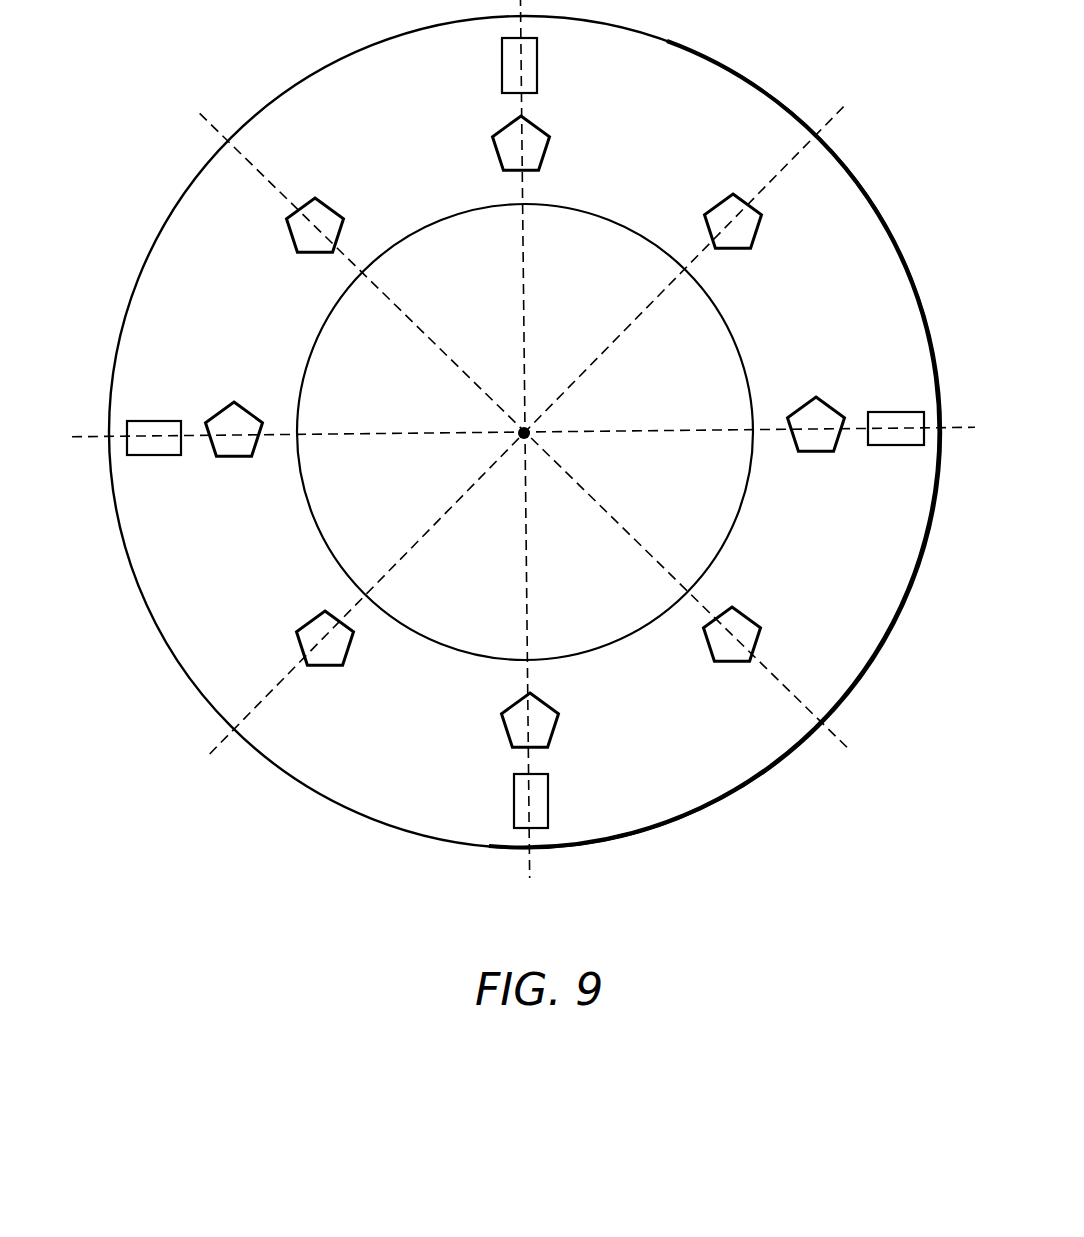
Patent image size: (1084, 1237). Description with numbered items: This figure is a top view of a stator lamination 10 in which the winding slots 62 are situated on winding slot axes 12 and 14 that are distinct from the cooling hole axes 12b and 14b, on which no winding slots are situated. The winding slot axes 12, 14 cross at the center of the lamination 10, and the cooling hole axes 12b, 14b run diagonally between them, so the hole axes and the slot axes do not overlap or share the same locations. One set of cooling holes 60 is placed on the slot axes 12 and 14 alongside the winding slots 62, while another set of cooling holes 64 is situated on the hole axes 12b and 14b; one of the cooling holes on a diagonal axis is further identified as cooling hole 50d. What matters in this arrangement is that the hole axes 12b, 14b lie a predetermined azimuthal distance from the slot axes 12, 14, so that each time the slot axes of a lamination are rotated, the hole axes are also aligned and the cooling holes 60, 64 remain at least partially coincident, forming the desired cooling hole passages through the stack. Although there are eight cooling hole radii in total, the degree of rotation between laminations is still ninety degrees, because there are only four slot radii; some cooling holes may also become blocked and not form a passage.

The circular substrate / wafer 10 is at (675, 58).
The winding slot axis 12 is at (525, 322).
The cooling hole axis 12b is at (422, 332).
The winding slot axis 14 is at (633, 433).
The cooling hole axis 14b is at (627, 330).
The pentagonal element 50d is at (745, 613).
The cooling holes 60 is at (342, 218).
The winding slots 62 is at (537, 58).
The cooling holes 64 is at (545, 148).